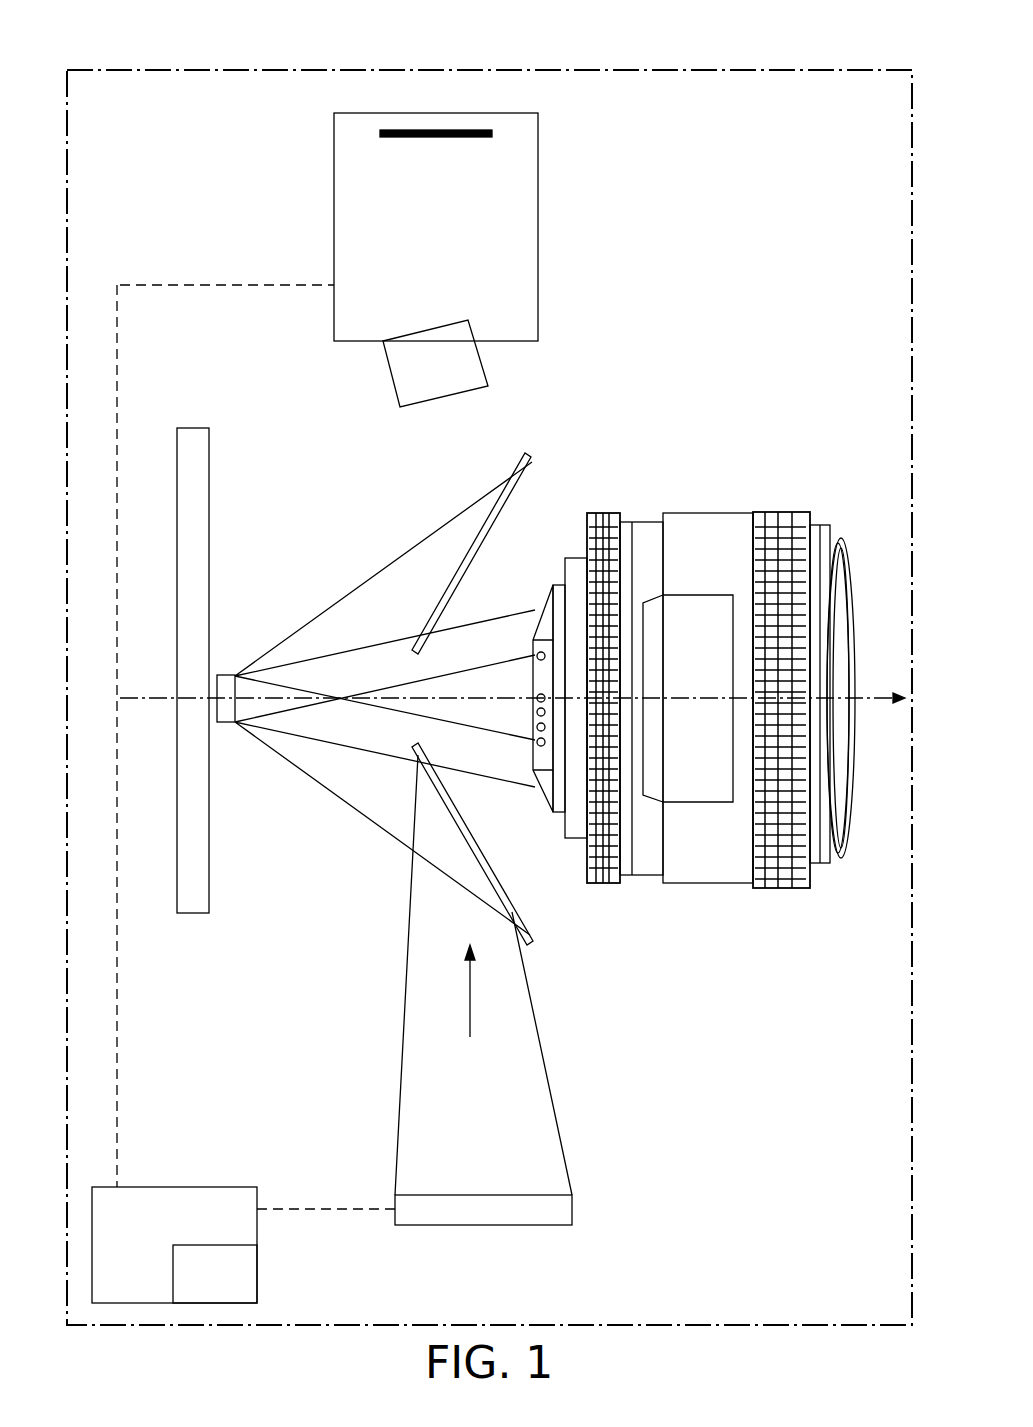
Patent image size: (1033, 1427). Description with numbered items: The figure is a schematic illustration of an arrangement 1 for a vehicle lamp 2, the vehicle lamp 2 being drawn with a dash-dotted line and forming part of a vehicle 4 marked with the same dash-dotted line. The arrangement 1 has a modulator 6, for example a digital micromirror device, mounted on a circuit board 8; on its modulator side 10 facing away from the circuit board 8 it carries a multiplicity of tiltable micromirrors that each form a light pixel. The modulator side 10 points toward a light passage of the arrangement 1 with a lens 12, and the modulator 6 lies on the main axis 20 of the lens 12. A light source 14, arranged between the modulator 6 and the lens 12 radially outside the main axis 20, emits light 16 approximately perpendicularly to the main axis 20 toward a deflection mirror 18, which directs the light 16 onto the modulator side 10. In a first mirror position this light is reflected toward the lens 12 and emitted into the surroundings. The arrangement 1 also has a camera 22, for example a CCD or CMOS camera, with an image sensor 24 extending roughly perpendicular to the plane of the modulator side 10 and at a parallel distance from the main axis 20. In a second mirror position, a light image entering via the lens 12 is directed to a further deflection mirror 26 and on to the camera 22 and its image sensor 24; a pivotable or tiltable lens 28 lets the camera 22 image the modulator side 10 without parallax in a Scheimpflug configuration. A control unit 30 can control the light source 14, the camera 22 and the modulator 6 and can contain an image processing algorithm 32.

The arrangement 1 is at (758, 290).
The vehicle lamp 2 is at (853, 70).
The vehicle 4 is at (489, 697).
The modulator 6 is at (216, 698).
The circuit board 8 is at (190, 913).
The modulator side 10 is at (236, 708).
The lens 12 is at (713, 523).
The light source 14 is at (497, 1212).
The light 16 is at (547, 1083).
The deflection mirror 18 is at (525, 930).
The main axis 20 is at (875, 698).
The camera 22 is at (452, 243).
The image sensor 24 is at (450, 137).
The deflection mirror 26 is at (507, 506).
The lens 28 is at (465, 375).
The control unit 30 is at (148, 1242).
The image processing algorithm 32 is at (231, 1288).